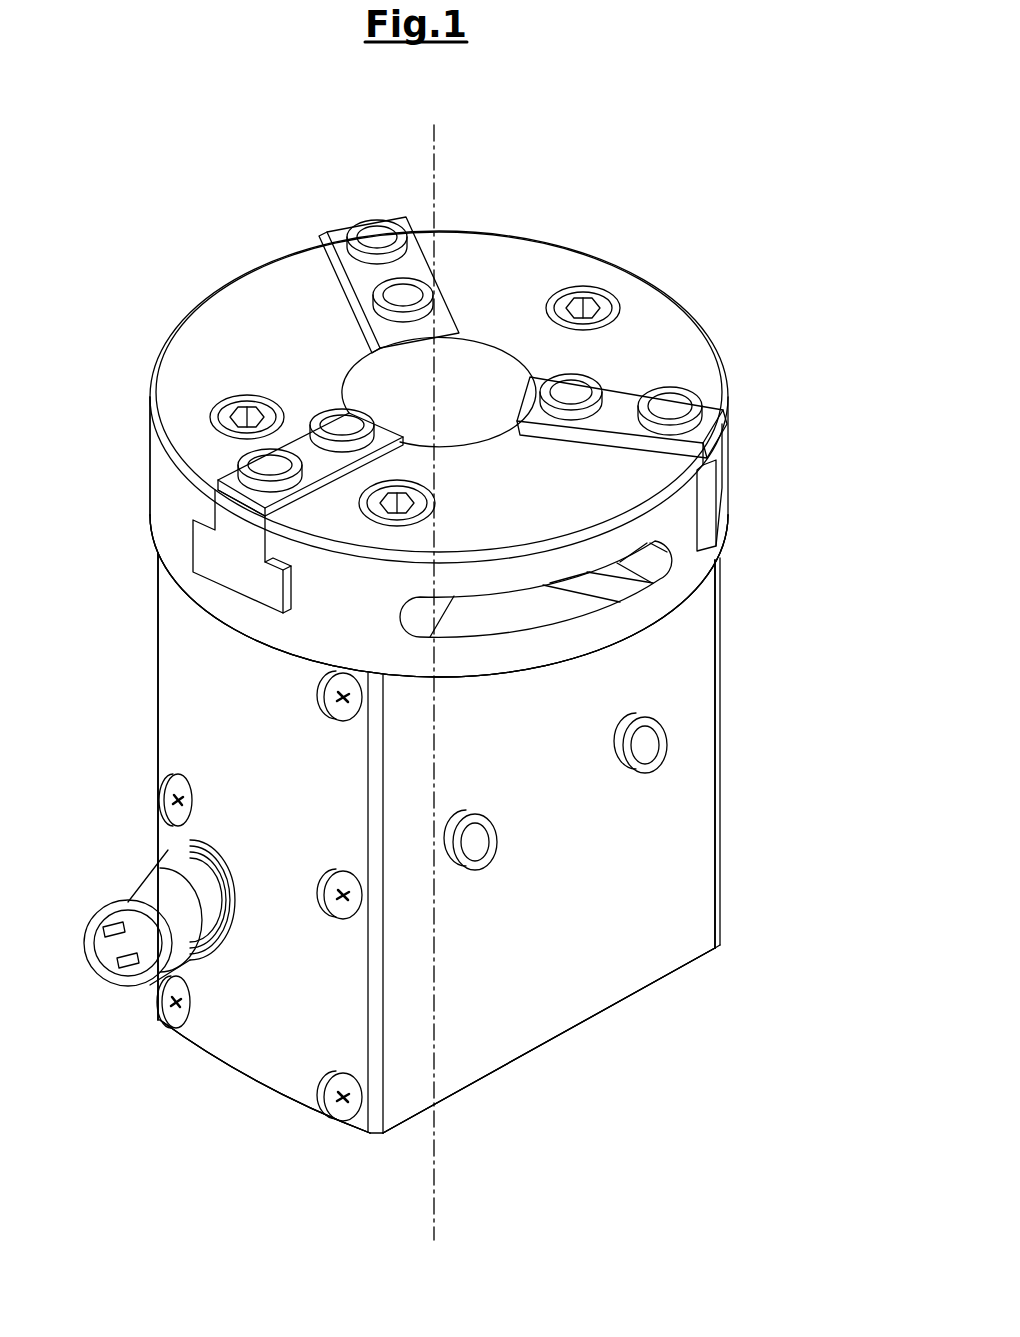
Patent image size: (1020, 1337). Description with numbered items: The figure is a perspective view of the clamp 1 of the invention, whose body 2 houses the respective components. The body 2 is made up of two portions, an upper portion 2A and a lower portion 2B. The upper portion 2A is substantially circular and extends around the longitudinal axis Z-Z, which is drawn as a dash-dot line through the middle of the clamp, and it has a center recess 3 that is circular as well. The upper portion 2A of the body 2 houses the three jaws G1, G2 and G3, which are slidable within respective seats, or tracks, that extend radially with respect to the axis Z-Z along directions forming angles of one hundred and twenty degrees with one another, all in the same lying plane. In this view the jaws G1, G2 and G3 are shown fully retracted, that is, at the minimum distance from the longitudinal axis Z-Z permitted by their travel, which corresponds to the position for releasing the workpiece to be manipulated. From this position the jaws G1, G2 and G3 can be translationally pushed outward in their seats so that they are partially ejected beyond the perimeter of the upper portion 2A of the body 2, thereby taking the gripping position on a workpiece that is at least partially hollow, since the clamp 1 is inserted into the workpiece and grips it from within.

The clamp 1 is at (750, 325).
The body 2 is at (163, 506).
The upper portion 2A is at (683, 577).
The lower portion 2B is at (665, 933).
The center recess 3 is at (503, 352).
The jaw G1 is at (217, 552).
The jaw G2 is at (713, 467).
The jaw G3 is at (386, 268).
The longitudinal axis Z is at (434, 155).